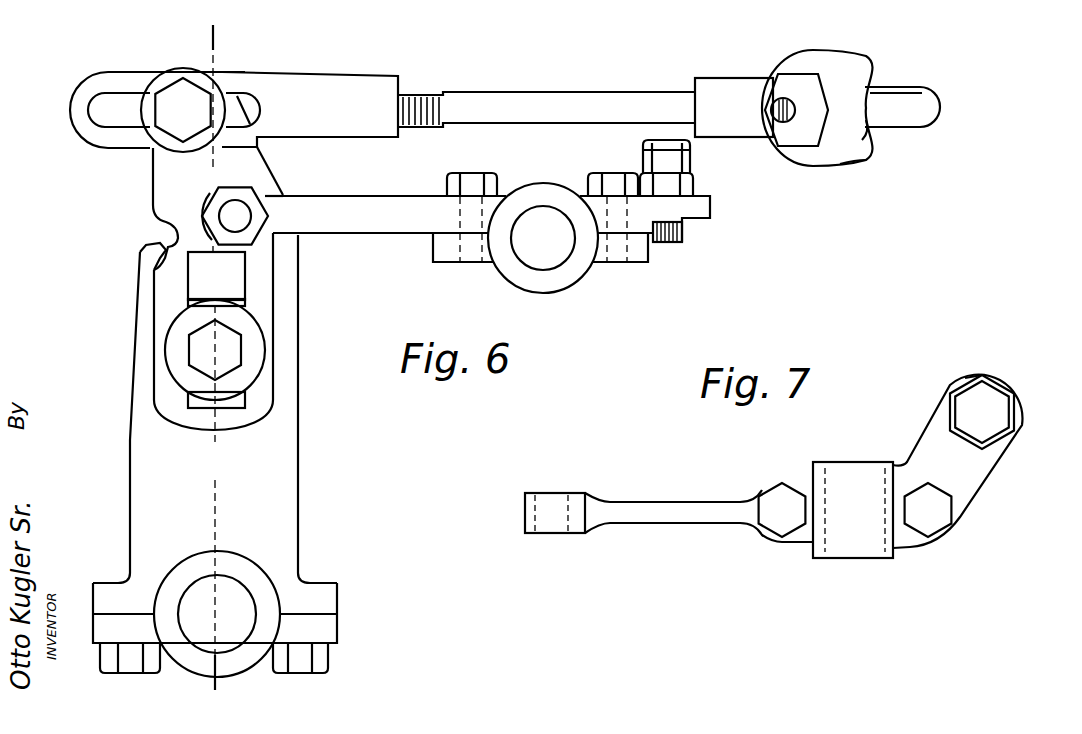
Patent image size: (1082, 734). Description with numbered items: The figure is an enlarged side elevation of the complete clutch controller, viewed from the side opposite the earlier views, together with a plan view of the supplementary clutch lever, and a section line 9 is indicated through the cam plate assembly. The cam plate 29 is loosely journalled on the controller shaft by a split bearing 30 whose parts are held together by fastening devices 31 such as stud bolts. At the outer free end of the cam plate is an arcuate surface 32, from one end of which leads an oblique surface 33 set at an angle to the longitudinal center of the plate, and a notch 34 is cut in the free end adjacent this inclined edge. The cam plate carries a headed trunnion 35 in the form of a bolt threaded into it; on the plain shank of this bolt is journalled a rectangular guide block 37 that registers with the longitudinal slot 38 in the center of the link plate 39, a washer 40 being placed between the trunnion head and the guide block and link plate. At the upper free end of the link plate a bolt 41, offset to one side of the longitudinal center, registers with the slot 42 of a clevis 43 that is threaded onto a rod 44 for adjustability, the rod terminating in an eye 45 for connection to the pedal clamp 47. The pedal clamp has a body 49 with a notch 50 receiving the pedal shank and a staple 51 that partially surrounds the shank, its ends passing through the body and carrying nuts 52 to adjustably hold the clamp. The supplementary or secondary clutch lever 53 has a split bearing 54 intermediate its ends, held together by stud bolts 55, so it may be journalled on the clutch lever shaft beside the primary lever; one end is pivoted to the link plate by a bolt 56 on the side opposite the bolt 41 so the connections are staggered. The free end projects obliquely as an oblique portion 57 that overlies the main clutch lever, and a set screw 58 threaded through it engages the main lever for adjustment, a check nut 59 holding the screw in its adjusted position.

In FIG. 6, the section line 9- 9 is at (206, 22).
In FIG. 6, the cam plate 29 is at (290, 533).
In FIG. 6, the split bearing 30 is at (317, 612).
In FIG. 6, the fastening devices 31 is at (100, 657).
In FIG. 6, the arcuate surface 32 is at (280, 243).
In FIG. 6, the oblique surface 33 is at (133, 295).
In FIG. 6, the notch 34 is at (160, 242).
In FIG. 6, the headed trunnion 35 is at (190, 352).
In FIG. 6, the guide block 37 is at (235, 301).
In FIG. 6, the longitudinal slot 38 is at (233, 283).
In FIG. 6, the link plate 39 is at (167, 170).
In FIG. 6, the washer 40 is at (257, 365).
In FIG. 6, the bolt 41 is at (199, 100).
In FIG. 6, the slot 42 is at (253, 104).
In FIG. 6, the clevis 43 is at (312, 135).
In FIG. 6, the rod 44 is at (497, 100).
In FIG. 6, the eye 45 is at (712, 80).
In FIG. 6, the pedal clamp 47 is at (822, 54).
In FIG. 6, the body 49 is at (846, 152).
In FIG. 6, the notch 50 is at (860, 150).
In FIG. 6, the staple 51 is at (905, 84).
In FIG. 6, the nuts 52 is at (815, 132).
In FIG. 7, the nuts 52 is at (970, 383).
In FIG. 6, the supplementary or secondary clutch lever 53 is at (383, 200).
In FIG. 7, the supplementary or secondary clutch lever 53 is at (813, 468).
In FIG. 6, the split bearing 54 is at (573, 272).
In FIG. 7, the split bearing 54 is at (800, 548).
In FIG. 6, the stud bolts 55 is at (497, 178).
In FIG. 7, the stud bolts 55 is at (775, 490).
In FIG. 6, the bolt 56 is at (243, 208).
In FIG. 6, the oblique portion 57 is at (682, 210).
In FIG. 7, the oblique portion 57 is at (935, 425).
In FIG. 6, the set screw 58 is at (683, 158).
In FIG. 7, the set screw 58 is at (1000, 410).
In FIG. 6, the check nut 59 is at (692, 182).